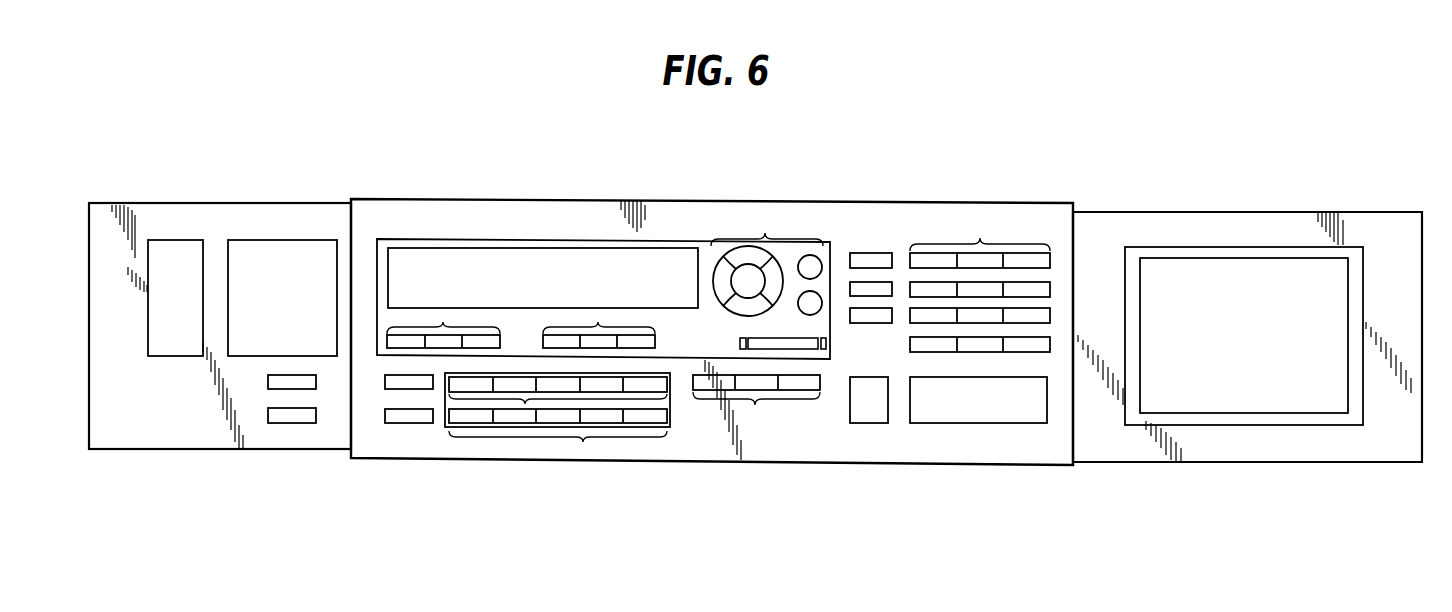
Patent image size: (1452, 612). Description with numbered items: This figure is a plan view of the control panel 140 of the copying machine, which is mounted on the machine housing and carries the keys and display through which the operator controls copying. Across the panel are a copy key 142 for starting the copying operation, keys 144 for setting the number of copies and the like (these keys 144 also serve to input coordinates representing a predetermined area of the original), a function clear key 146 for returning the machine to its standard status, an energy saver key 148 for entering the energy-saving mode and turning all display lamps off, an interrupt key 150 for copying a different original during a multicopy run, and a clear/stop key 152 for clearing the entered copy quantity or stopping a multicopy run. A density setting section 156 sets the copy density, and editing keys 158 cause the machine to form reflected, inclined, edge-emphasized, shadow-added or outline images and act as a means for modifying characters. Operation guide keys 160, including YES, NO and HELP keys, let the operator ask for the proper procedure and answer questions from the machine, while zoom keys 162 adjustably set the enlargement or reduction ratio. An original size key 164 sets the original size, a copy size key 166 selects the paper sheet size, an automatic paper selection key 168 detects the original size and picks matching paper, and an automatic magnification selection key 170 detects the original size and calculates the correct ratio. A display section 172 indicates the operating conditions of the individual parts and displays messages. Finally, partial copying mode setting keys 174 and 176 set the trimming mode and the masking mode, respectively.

The control panel 140 is at (1106, 176).
The copy key 142 is at (990, 410).
The keys for setting number of copies 144 is at (978, 232).
The function clear key 146 is at (860, 253).
The energy saver key 148 is at (887, 289).
The interrupt key 150 is at (883, 316).
The clear/stop key 152 is at (860, 412).
The density setting section 156 is at (755, 406).
The editing keys 158 is at (764, 226).
The operation guide keys 160 is at (598, 318).
The zoom keys 162 is at (443, 318).
The original size key 164 is at (523, 409).
The copy size key 166 is at (557, 441).
The automatic paper selection key 168 is at (413, 418).
The automatic magnification selection key 170 is at (392, 382).
The display section 172 is at (540, 275).
The partial copying mode setting key 174 is at (275, 382).
The partial copying mode setting key 176 is at (294, 418).